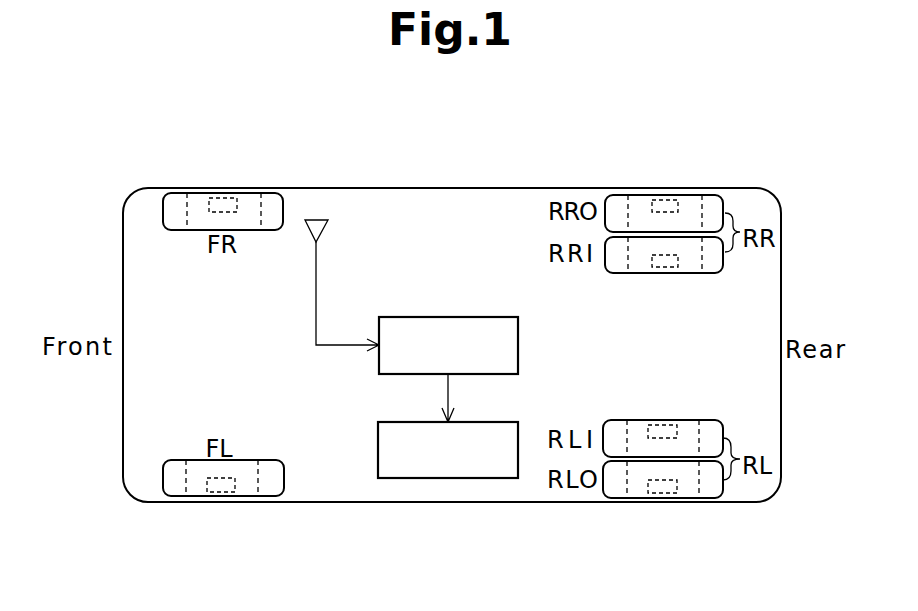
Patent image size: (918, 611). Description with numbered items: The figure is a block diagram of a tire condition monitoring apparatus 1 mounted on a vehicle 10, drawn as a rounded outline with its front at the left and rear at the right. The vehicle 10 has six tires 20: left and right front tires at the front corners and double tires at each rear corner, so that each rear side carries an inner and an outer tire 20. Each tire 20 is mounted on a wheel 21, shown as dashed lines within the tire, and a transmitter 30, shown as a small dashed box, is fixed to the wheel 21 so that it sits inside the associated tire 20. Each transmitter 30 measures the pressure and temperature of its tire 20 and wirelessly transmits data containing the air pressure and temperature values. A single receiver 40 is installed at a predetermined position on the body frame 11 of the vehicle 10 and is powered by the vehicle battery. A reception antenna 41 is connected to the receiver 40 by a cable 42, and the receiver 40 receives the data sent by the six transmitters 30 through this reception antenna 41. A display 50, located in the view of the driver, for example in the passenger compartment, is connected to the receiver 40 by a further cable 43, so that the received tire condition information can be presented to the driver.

The tire condition monitoring apparatus 1 is at (463, 293).
The vehicle 10 is at (512, 188).
The body frame 11 is at (445, 188).
The tire 20 is at (262, 210).
The wheel 21 is at (187, 222).
The transmitter 30 is at (227, 196).
The receiver 40 is at (452, 317).
The reception antenna 41 is at (321, 234).
The cable 42 is at (318, 287).
The cable 43 is at (451, 391).
The display 50 is at (378, 451).